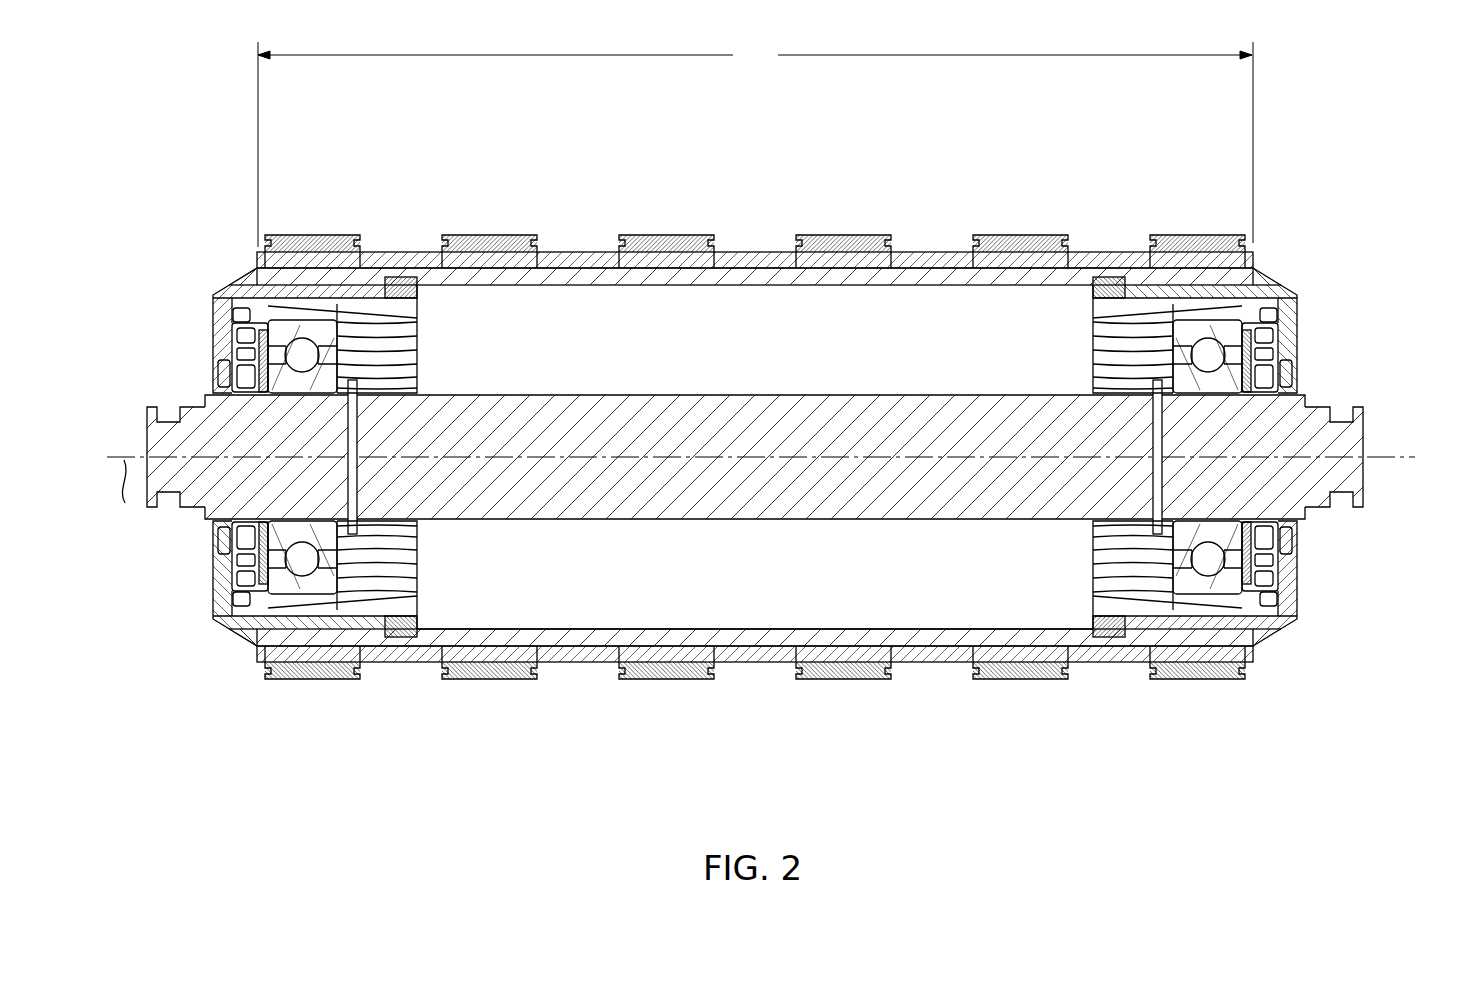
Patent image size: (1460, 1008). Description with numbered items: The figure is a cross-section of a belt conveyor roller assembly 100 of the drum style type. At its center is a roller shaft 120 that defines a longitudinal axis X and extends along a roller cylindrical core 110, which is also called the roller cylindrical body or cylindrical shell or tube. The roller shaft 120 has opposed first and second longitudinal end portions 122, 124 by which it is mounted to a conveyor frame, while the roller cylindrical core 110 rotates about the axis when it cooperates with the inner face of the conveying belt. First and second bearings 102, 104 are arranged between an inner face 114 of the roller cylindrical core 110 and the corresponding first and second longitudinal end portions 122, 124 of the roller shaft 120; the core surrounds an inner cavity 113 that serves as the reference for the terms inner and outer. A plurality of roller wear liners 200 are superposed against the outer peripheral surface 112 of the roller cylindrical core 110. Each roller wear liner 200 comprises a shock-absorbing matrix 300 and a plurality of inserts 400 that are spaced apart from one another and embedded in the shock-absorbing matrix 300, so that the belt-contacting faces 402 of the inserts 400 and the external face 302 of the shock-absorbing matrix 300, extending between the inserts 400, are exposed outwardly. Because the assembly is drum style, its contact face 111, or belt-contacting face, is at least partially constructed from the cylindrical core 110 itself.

The belt conveyor roller assembly 100 is at (767, 394).
The first bearing 102 is at (283, 383).
The second bearing 104 is at (1188, 530).
The roller cylindrical core 110 is at (1225, 277).
The contact face 111 is at (1123, 250).
The outer peripheral surface 112 is at (523, 263).
The inner cavity 113 is at (590, 548).
The inner face 114 is at (281, 290).
The roller shaft 120 is at (767, 457).
The first longitudinal end portion 122 is at (177, 447).
The second longitudinal end portion 124 is at (1343, 475).
The roller wear liner 200 is at (467, 232).
The shock-absorbing matrix 300 is at (692, 262).
The external face of the shock-absorbing matrix 302 is at (883, 237).
The insert 400 is at (840, 663).
The belt-contacting face 402 is at (1025, 235).